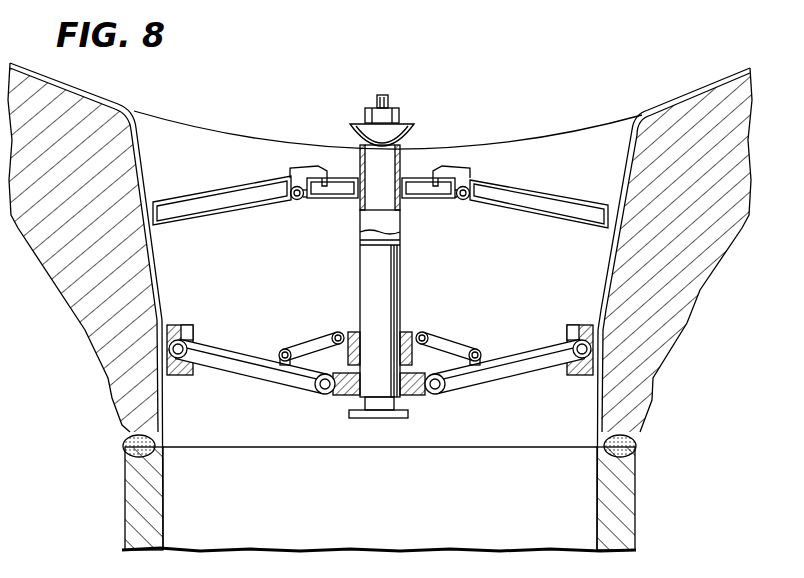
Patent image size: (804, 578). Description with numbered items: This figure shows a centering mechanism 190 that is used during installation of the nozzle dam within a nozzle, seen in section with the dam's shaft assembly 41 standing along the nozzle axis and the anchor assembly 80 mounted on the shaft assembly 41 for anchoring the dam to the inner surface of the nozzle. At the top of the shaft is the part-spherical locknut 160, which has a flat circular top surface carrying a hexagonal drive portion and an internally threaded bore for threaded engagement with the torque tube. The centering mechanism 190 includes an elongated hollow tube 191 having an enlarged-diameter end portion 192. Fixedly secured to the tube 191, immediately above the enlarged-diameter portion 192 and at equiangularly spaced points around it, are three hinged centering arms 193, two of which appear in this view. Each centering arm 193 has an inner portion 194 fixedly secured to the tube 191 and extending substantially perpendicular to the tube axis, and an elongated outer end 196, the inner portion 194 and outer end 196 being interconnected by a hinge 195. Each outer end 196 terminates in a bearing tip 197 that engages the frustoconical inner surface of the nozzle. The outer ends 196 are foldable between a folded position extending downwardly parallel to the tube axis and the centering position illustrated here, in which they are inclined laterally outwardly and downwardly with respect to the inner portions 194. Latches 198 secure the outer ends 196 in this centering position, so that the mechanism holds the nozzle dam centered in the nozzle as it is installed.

The shaft assembly 41 is at (341, 251).
The anchor assembly 80 is at (258, 340).
The part-spherical locknut 160 is at (360, 142).
The centering mechanism 190 is at (232, 173).
The elongated hollow tube 191 is at (401, 162).
The enlarged-diameter end portion 192 is at (363, 212).
The hinged centering arm 193 is at (478, 226).
The inner portion 194 is at (425, 202).
The hinge 195 is at (293, 200).
The elongated outer end 196 is at (553, 216).
The bearing tip 197 is at (616, 213).
The latch 198 is at (306, 167).